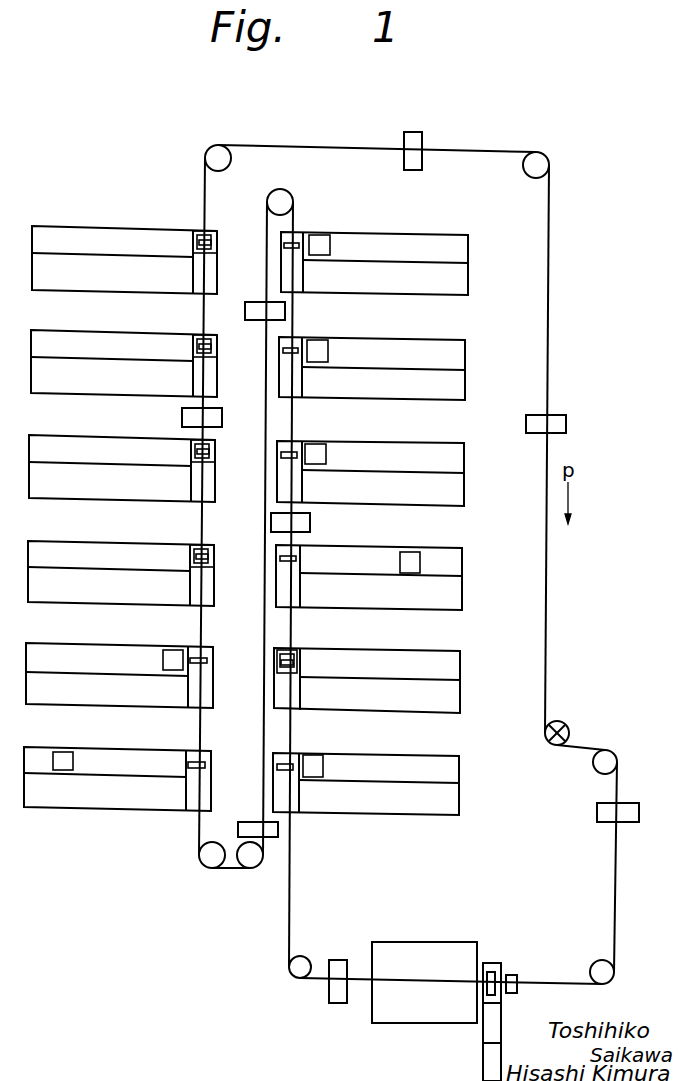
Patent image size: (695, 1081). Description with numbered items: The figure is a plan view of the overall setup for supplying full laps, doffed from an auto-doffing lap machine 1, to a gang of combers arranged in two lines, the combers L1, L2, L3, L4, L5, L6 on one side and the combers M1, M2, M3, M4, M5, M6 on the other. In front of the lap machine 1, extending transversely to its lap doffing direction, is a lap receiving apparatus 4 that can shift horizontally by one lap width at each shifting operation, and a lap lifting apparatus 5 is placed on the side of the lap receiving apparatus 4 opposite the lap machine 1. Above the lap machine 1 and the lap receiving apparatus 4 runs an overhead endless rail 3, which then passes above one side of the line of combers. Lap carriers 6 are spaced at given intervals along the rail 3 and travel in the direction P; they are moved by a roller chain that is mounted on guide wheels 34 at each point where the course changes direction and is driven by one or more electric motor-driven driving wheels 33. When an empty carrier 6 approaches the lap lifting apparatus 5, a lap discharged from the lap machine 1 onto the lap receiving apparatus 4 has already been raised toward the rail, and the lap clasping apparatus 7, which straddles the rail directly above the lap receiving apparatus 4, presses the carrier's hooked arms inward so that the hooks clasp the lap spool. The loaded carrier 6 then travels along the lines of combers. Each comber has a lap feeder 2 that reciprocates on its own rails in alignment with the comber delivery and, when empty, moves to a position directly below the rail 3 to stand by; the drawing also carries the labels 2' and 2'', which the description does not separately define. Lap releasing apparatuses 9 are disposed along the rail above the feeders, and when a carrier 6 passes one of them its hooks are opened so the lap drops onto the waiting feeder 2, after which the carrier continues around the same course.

The lap machine 1 is at (392, 946).
The lap feeder 2 is at (256, 479).
The carrier engaging member 2' is at (253, 490).
The carrier engaging member 2'' is at (242, 642).
The overhead endless rail 3 is at (546, 648).
The lap receiving apparatus 4 is at (497, 1028).
The lap lifting apparatus 5 is at (517, 982).
The lap carrier 6 is at (416, 160).
The lap clasping apparatus 7 is at (491, 972).
The lap releasing apparatus 9 is at (217, 250).
The driving wheel 33 is at (561, 726).
The guide wheel 34 is at (597, 764).
The comber M1 is at (34, 797).
The comber M2 is at (36, 694).
The comber M3 is at (38, 592).
The comber M4 is at (39, 488).
The comber M5 is at (41, 383).
The comber M6 is at (42, 280).
The comber L1 is at (453, 792).
The comber L2 is at (454, 690).
The comber L3 is at (456, 592).
The comber L4 is at (458, 482).
The comber L5 is at (459, 390).
The comber L6 is at (462, 285).